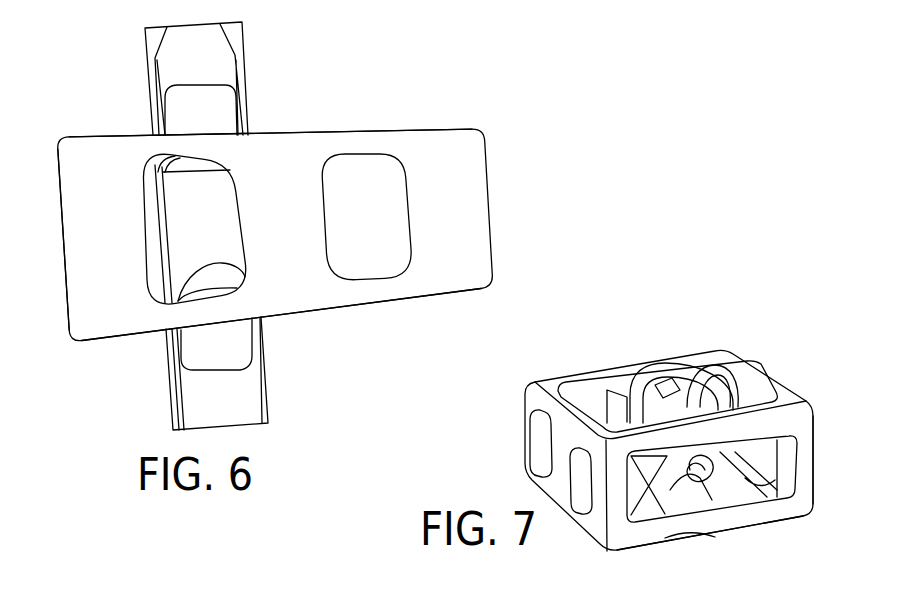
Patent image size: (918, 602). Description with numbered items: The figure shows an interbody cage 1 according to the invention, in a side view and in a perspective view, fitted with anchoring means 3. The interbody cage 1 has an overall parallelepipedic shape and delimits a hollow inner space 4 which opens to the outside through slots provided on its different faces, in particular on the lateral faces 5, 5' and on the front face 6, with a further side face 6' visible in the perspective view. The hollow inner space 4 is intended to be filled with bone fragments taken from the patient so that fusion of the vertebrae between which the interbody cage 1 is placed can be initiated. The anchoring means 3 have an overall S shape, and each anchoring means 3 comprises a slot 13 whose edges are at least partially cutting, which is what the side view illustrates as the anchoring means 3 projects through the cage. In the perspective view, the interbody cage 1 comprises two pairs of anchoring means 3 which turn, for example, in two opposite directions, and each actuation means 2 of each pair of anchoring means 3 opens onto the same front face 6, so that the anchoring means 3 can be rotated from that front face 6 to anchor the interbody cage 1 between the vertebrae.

In FIG. 6, the interbody cage 1 is at (512, 134).
In FIG. 7, the interbody cage 1 is at (576, 346).
In FIG. 7, the actuation means 2 is at (672, 487).
In FIG. 6, the anchoring means 3 is at (266, 71).
In FIG. 7, the anchoring means 3 is at (672, 362).
In FIG. 6, the hollow inner space 4 is at (390, 262).
In FIG. 7, the hollow inner space 4 is at (730, 487).
In FIG. 6, the lateral face 5 is at (270, 104).
In FIG. 7, the lateral face 5 is at (667, 363).
In FIG. 6, the lateral face 5' is at (281, 328).
In FIG. 7, the lateral face 5' is at (720, 549).
In FIG. 6, the front face 6 is at (44, 239).
In FIG. 7, the front face 6 is at (819, 460).
In FIG. 7, the left side wall 6' is at (549, 416).
In FIG. 6, the slot 13 is at (173, 104).